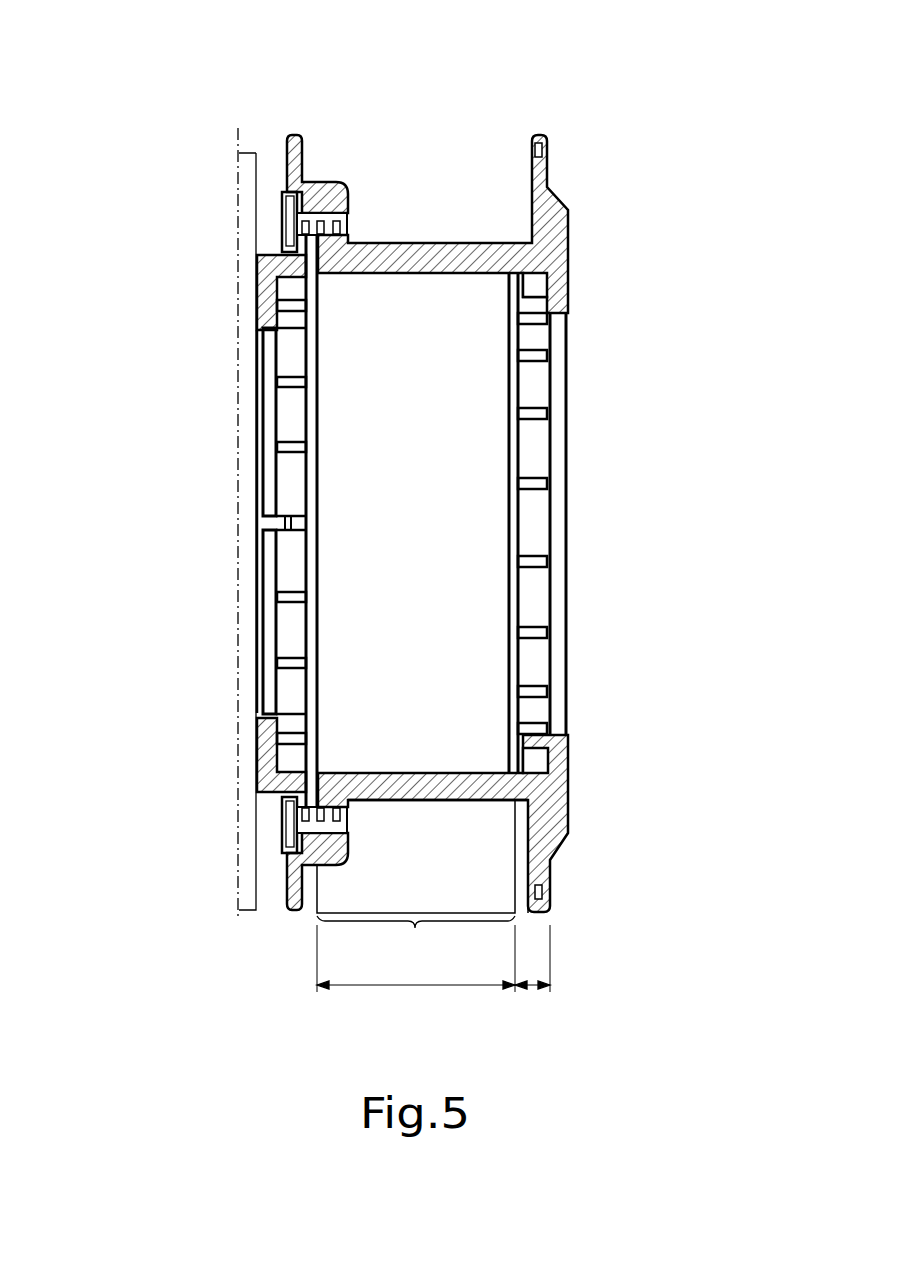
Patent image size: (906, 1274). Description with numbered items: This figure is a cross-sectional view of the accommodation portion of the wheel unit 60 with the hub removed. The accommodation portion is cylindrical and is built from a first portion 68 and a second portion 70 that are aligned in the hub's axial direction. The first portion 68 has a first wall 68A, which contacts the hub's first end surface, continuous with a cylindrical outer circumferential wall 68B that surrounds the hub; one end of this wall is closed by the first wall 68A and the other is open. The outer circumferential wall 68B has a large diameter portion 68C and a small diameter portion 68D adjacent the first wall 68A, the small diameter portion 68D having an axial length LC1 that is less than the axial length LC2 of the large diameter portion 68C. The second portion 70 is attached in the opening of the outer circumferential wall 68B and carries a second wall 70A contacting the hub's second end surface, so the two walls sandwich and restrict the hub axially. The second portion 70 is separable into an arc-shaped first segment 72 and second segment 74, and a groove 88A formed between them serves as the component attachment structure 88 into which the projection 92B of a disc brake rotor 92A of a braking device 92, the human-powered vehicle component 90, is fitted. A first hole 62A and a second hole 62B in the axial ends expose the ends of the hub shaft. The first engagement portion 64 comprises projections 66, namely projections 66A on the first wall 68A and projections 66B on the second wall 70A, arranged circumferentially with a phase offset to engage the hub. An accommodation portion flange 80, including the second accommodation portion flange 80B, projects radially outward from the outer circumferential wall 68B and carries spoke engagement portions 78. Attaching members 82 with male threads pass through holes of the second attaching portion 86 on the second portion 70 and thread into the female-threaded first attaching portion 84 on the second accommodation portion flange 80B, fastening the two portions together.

The human-powered vehicle component 90 is at (90, 53).
The braking device 92 is at (210, 479).
The disc brake rotor 92A is at (247, 153).
The projection 92B is at (270, 533).
The accommodation portion flange 80 is at (233, 522).
The second accommodation portion flange 80B is at (290, 178).
The second attaching portion 86 is at (226, 531).
The attaching member 82 is at (288, 246).
The first attaching portion 84 is at (348, 228).
The wheel unit 60 is at (715, 214).
The spoke engagement portion 78 is at (545, 155).
The first portion 68 is at (488, 548).
The first wall 68A is at (568, 292).
The outer circumferential wall 68B is at (490, 803).
The large diameter portion 68C is at (416, 882).
The small diameter portion 68D is at (530, 917).
The projections 66 is at (408, 521).
The projections on first wall 66A is at (509, 563).
The projections on second wall 66B is at (298, 448).
The first engagement portion 64 is at (334, 488).
The first hole 62A is at (566, 708).
The second hole 62B is at (257, 698).
The second portion 70 is at (219, 538).
The second wall 70A is at (263, 288).
The first segment 72 is at (239, 292).
The second segment 74 is at (258, 740).
The human-powered vehicle component attachment structure 88 is at (205, 521).
The groove 88A is at (263, 523).
The length of small diameter portion LC1 is at (415, 990).
The length of large diameter portion LC2 is at (528, 990).